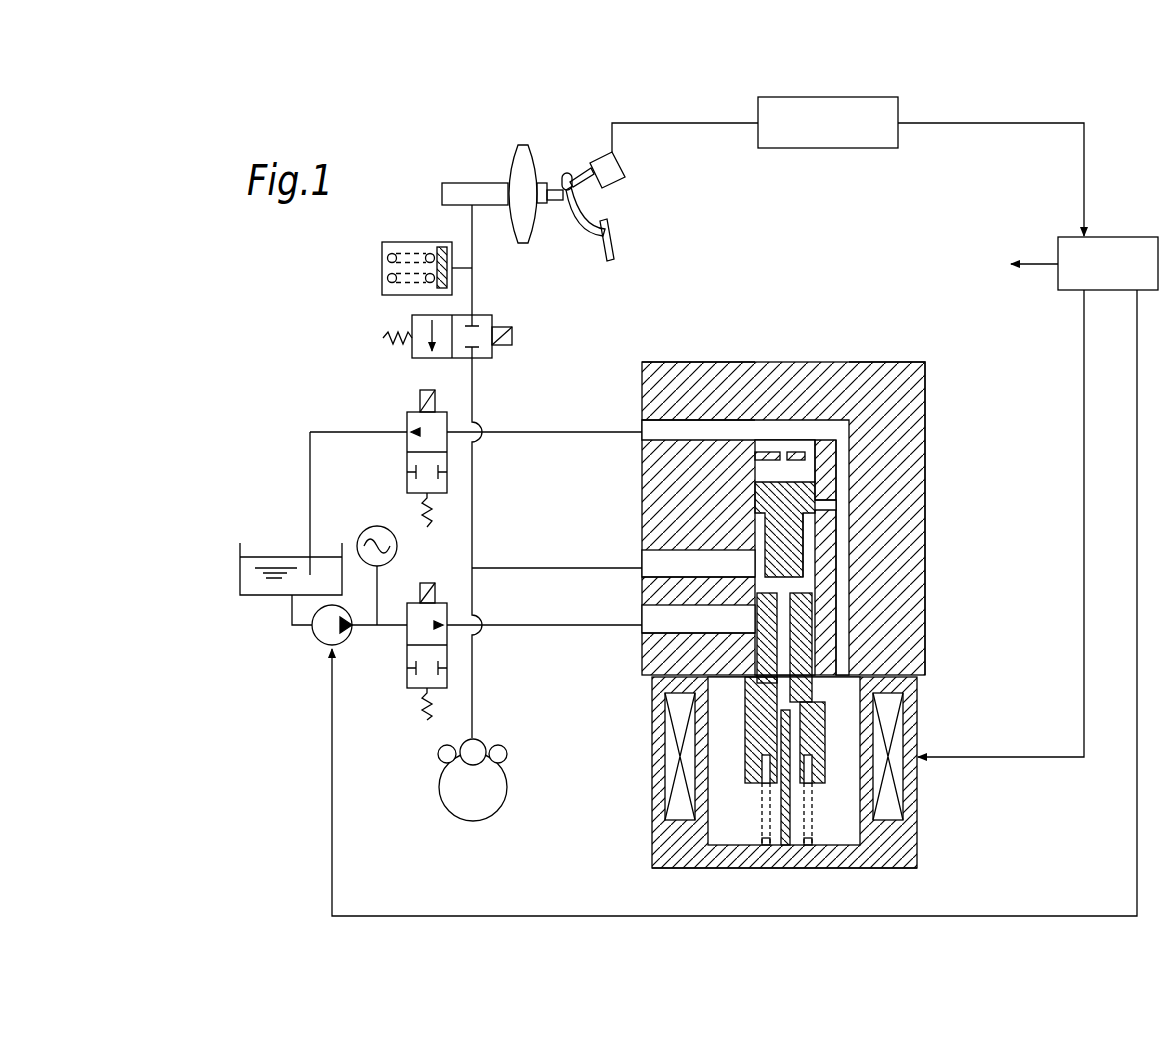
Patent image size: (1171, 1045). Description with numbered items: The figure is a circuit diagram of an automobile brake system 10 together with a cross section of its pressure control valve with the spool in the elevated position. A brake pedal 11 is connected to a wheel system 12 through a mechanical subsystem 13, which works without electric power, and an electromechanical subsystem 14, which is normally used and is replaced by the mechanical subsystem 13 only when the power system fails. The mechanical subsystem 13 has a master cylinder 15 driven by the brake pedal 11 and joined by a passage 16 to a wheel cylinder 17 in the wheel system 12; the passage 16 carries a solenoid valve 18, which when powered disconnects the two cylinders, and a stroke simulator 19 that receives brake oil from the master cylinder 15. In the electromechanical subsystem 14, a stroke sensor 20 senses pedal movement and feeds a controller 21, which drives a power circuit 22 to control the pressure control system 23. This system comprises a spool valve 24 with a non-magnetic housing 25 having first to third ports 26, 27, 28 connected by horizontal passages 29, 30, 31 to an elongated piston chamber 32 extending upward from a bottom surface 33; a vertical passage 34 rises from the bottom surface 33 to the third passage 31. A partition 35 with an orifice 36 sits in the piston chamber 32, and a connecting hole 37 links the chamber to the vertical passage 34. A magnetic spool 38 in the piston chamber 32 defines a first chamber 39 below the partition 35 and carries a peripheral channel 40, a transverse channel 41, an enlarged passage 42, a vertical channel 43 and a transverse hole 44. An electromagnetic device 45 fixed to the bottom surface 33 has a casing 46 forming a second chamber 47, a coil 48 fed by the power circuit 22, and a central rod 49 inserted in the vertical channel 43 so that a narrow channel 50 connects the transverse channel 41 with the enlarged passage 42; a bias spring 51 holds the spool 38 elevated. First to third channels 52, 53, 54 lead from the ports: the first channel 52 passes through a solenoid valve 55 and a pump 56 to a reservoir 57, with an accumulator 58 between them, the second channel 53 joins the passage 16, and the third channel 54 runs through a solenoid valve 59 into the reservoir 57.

The brake system 10 is at (588, 142).
The brake pedal 11 is at (613, 242).
The wheel system 12 is at (483, 823).
The mechanical subsystem 13 is at (441, 188).
The electromechanical subsystem 14 is at (560, 429).
The master cylinder 15 is at (480, 183).
The passage 16 is at (474, 290).
The wheel cylinder 17 is at (476, 742).
The solenoid valve 18 is at (492, 318).
The stroke simulator 19 is at (382, 270).
The stroke sensor 20 is at (626, 177).
The controller 21 is at (804, 148).
The power circuit 22 is at (1068, 237).
The pressure control system 23 is at (718, 361).
The spool valve 24 is at (663, 361).
The housing 25 is at (907, 362).
The first port 26 is at (642, 630).
The second port 27 is at (642, 575).
The third port 28 is at (642, 440).
The first passage 29 is at (657, 618).
The second passage 30 is at (652, 562).
The third passage 31 is at (652, 427).
The piston chamber 32 is at (755, 472).
The bottom surface 33 is at (722, 680).
The vertical passage 34 is at (843, 570).
The partition 35 is at (772, 452).
The orifice 36 is at (797, 460).
The connecting hole 37 is at (830, 507).
The spool 38 is at (828, 718).
The first chamber 39 is at (807, 473).
The channel 40 is at (810, 540).
The transverse channel 41 is at (797, 580).
The enlarged passage 42 is at (777, 745).
The vertical channel 43 is at (785, 607).
The transverse hole 44 is at (800, 690).
The electromagnetic device 45 is at (650, 804).
The casing 46 is at (652, 850).
The second chamber 47 is at (852, 830).
The coil 48 is at (890, 798).
The rod 49 is at (792, 818).
The narrow channel 50 is at (787, 660).
The bias spring 51 is at (810, 815).
The first channel 52 is at (512, 625).
The second channel 53 is at (512, 568).
The third channel 54 is at (512, 432).
The solenoid valve 55 is at (407, 672).
The pump 56 is at (318, 640).
The reservoir 57 is at (262, 597).
The accumulator 58 is at (398, 546).
The solenoid valve 59 is at (407, 466).